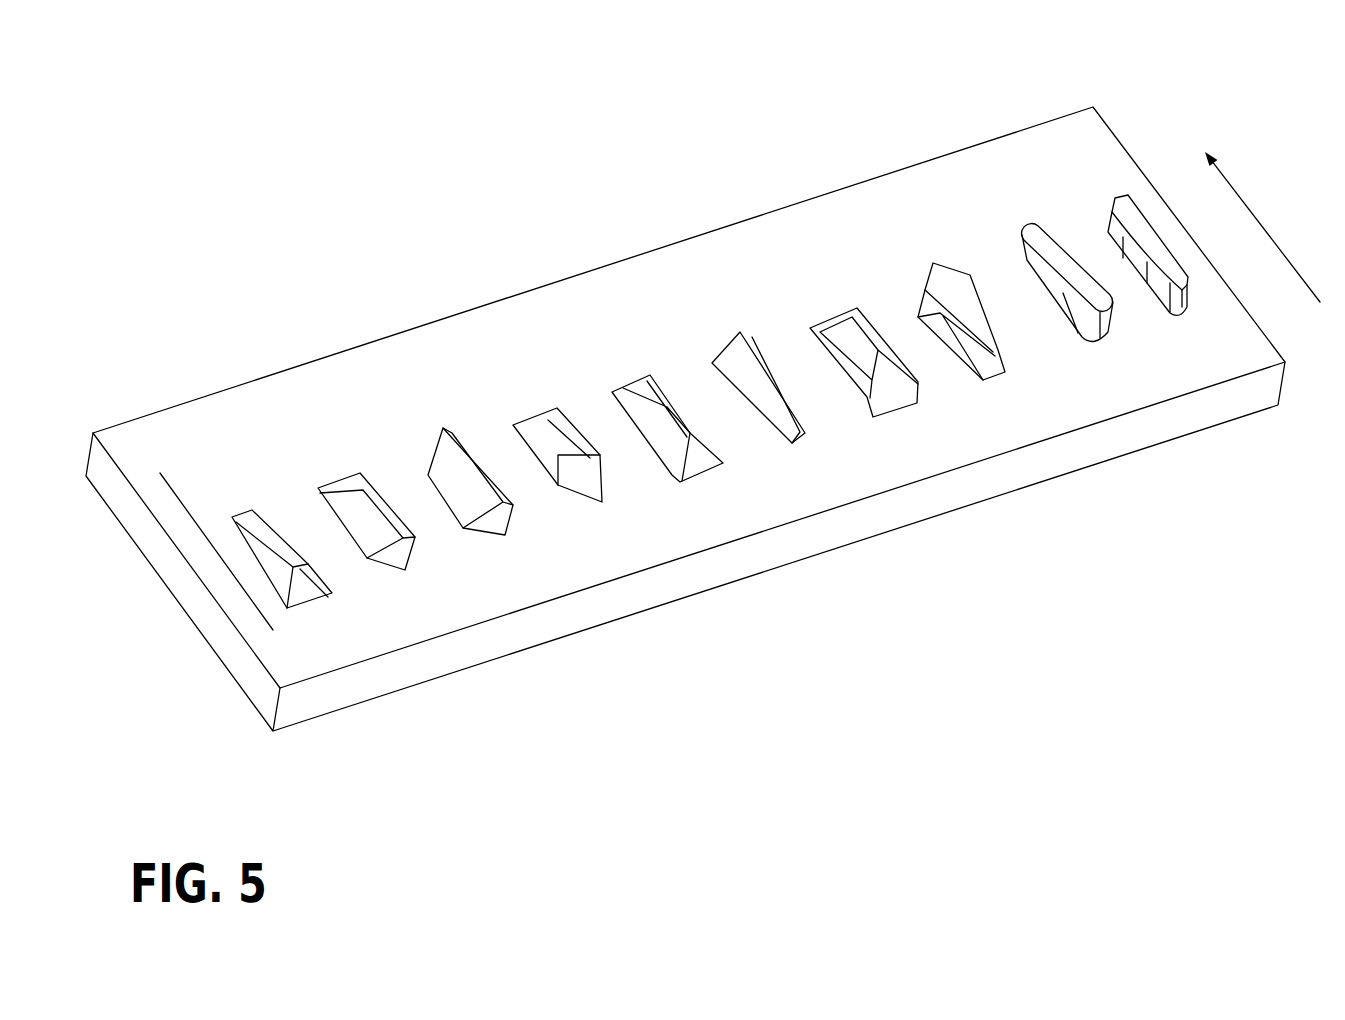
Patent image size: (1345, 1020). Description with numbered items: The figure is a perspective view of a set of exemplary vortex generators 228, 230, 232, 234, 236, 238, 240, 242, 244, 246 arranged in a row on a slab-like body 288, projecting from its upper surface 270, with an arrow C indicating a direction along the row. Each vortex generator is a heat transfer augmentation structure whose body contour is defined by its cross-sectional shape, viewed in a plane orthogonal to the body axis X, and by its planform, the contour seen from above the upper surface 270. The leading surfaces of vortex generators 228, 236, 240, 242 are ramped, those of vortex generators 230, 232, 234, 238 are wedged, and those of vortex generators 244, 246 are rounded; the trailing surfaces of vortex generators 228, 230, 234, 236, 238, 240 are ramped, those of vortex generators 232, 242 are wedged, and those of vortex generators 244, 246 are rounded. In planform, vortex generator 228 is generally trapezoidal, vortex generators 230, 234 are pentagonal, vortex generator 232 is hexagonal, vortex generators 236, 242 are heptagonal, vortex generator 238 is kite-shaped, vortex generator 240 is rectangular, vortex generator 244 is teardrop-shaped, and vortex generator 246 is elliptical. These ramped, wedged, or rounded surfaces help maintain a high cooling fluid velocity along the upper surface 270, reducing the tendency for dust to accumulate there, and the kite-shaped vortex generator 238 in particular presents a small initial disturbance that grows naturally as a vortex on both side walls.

The vortex generator 228 is at (260, 503).
The vortex generator 230 is at (372, 466).
The vortex generator 232 is at (468, 424).
The vortex generator 234 is at (580, 404).
The vortex generator 236 is at (670, 378).
The vortex generator 238 is at (760, 336).
The vortex generator 240 is at (872, 305).
The vortex generator 242 is at (977, 268).
The vortex generator 244 is at (1057, 232).
The vortex generator 246 is at (1147, 207).
The substrate 288 is at (100, 427).
The upper surface 270 is at (203, 543).
The body axis X is at (253, 600).
The direction arrow C is at (1262, 227).